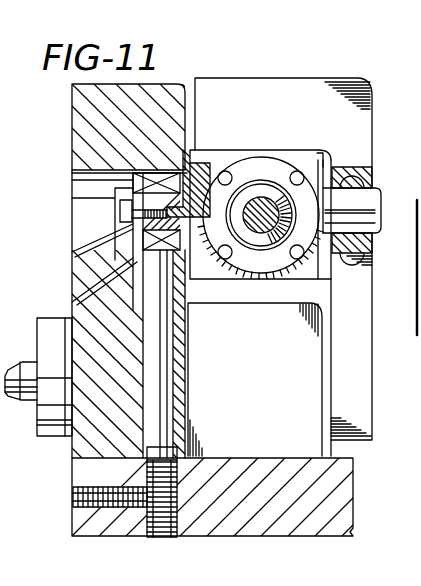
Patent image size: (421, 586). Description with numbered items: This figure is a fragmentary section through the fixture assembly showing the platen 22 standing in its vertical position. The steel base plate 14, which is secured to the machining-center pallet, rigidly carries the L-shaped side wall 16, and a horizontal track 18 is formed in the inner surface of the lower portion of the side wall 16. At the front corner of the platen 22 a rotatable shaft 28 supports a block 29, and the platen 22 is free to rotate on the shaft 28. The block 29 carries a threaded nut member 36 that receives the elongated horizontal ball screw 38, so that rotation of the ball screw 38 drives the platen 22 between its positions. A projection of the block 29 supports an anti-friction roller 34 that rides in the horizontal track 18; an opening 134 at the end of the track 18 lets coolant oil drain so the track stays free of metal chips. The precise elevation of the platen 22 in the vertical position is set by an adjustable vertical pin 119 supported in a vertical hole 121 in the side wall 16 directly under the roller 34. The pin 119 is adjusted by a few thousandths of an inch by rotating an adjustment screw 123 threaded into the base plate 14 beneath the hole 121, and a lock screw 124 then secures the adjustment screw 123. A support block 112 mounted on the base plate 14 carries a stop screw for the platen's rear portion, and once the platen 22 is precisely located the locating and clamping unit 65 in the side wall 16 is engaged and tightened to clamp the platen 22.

The base plate 14 is at (343, 493).
The side wall 16 is at (160, 82).
The horizontal track 18 is at (123, 248).
The platen 22 is at (263, 88).
The rotatable shaft 28 is at (350, 198).
The block 29 is at (273, 150).
The anti-friction roller 34 is at (125, 232).
The threaded nut member 36 is at (258, 185).
The ball screw 38 is at (270, 198).
The locating and clamping unit 65 is at (36, 441).
The support block 112 is at (290, 374).
The adjustable vertical pin 119 is at (177, 328).
The vertical hole 121 is at (173, 360).
The adjustment screw 123 is at (178, 517).
The lock screw 124 is at (119, 505).
The opening 134 is at (78, 193).